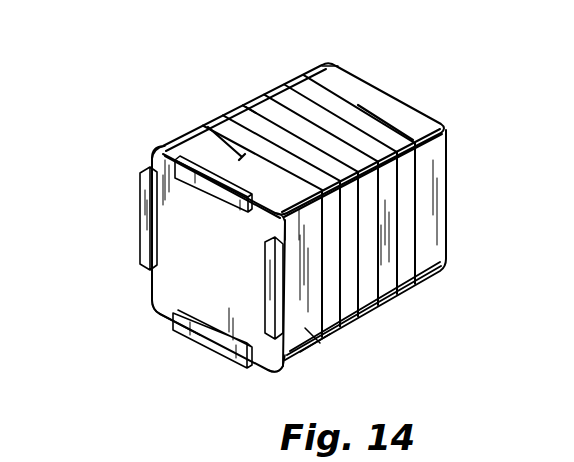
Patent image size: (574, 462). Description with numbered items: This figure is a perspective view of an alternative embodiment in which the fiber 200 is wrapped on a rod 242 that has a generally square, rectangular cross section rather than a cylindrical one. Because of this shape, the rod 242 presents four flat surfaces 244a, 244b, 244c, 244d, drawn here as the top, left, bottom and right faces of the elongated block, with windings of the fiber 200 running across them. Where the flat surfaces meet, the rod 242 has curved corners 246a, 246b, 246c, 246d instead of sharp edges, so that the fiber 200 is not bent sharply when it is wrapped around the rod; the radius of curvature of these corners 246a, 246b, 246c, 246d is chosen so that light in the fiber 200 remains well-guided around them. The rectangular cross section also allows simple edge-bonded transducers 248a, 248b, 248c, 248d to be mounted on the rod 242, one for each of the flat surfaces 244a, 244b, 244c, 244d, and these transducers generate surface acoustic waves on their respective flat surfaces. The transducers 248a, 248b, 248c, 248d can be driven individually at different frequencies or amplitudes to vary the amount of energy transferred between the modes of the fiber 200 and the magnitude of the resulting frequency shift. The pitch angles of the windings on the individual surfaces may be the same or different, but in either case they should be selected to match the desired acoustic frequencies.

The fiber 200 is at (250, 118).
The rod 242 is at (157, 281).
The flat surface 244a is at (330, 69).
The flat surface 244b is at (137, 267).
The flat surface 244c is at (163, 313).
The flat surface 244d is at (312, 337).
The curved corner 246a is at (147, 145).
The curved corner 246b is at (147, 300).
The curved corner 246c is at (275, 372).
The curved corner 246d is at (278, 223).
The edge-bonded transducer 248a is at (212, 190).
The edge-bonded transducer 248b is at (147, 210).
The edge-bonded transducer 248c is at (230, 350).
The edge-bonded transducer 248d is at (273, 295).